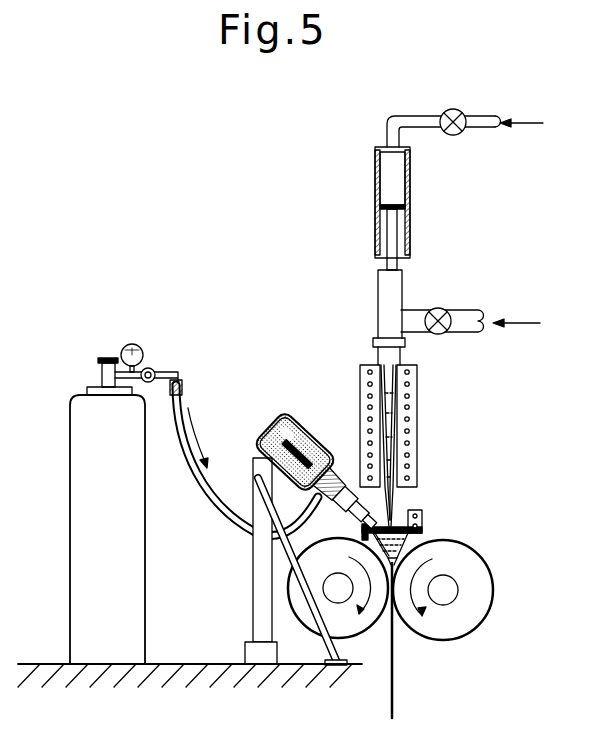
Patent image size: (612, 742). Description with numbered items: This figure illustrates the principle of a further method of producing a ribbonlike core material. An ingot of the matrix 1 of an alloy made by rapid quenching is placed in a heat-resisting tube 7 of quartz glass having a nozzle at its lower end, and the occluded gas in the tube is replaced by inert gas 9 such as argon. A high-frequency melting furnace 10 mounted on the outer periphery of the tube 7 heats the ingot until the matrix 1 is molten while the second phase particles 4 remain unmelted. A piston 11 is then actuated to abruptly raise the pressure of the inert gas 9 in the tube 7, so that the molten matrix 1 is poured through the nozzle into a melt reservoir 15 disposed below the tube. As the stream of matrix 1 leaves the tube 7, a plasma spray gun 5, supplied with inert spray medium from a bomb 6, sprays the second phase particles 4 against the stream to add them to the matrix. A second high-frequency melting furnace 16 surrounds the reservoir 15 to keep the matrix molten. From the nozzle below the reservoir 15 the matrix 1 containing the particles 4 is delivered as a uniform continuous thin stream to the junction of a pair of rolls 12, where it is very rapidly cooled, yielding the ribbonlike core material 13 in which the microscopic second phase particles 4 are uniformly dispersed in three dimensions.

The matrix 1 is at (380, 393).
The second phase particles 4 is at (317, 447).
The plasma spray gun 5 is at (291, 410).
The bomb 6 is at (88, 537).
The heat-resisting tube 7 is at (386, 438).
The inert gas 9 is at (523, 326).
The high-frequency melting furnace 10 is at (418, 378).
The piston 11 is at (410, 197).
The rolls 12 is at (360, 634).
The ribbonlike core material 13 is at (393, 697).
The melt reservoir 15 is at (420, 552).
The second high-frequency melting furnace 16 is at (422, 513).